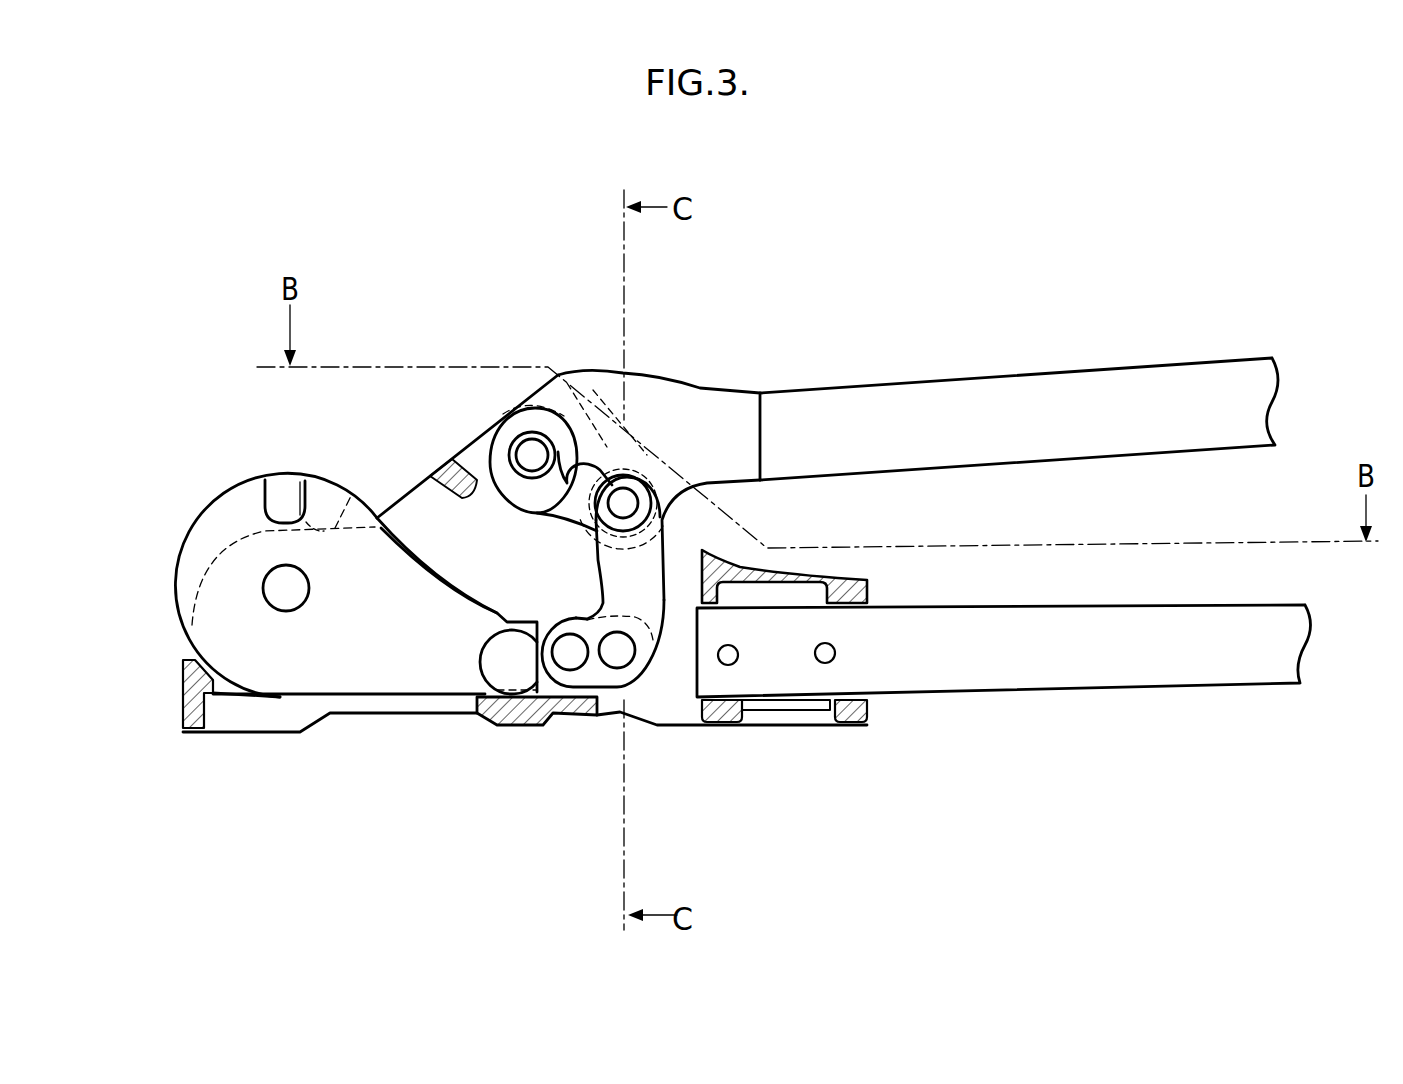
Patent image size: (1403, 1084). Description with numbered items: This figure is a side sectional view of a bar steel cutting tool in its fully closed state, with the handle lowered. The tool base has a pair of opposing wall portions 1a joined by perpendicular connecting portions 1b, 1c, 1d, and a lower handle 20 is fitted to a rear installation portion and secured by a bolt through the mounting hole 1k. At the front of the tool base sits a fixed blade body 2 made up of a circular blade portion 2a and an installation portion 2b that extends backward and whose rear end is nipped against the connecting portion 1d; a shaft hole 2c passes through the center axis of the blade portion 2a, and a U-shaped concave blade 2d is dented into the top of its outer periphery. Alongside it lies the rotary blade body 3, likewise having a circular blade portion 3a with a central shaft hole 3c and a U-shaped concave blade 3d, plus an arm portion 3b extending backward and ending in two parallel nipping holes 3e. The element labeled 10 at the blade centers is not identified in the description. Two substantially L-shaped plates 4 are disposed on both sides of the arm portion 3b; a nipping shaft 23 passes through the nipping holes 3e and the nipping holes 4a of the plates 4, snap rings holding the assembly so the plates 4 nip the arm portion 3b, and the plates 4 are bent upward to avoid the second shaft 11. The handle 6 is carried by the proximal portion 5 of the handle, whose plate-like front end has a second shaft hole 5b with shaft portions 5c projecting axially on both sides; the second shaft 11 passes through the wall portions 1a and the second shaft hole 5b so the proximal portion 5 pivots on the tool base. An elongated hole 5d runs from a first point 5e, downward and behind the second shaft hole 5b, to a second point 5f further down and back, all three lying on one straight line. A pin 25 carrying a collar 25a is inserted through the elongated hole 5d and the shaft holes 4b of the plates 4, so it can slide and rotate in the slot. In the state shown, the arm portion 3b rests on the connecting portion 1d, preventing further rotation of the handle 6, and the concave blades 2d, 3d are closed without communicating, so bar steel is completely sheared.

The wall portion 1a is at (427, 540).
The connecting portion 1b is at (196, 705).
The connecting portion 1c is at (437, 530).
The connecting portion 1d is at (536, 713).
The mounting hole 1k is at (823, 657).
The fixed blade body 2 is at (172, 528).
The blade portion 2a is at (223, 517).
The installation portion 2b is at (477, 713).
The shaft hole 2c is at (285, 608).
The concave blade 2d is at (297, 510).
The rotary blade body 3 is at (170, 578).
The blade portion 3a is at (283, 497).
The arm portion 3b is at (572, 672).
The shaft hole 3c is at (285, 608).
The concave blade 3d is at (303, 510).
The nipping hole 3e is at (600, 710).
The plate 4 is at (662, 522).
The nipping hole 4a is at (627, 700).
The shaft hole 4b is at (668, 497).
The proximal portion of the handle 5 is at (718, 420).
The second shaft hole 5b is at (500, 418).
The shaft portion 5c is at (490, 461).
The elongated hole 5d is at (587, 485).
The first point 5e is at (556, 395).
The second point 5f is at (641, 440).
The handle 6 is at (1040, 423).
The jaw pivot pin 10 is at (283, 590).
The second shaft 11 is at (530, 453).
The lower handle 20 is at (1040, 655).
The nipping shaft 23 is at (568, 650).
The pin 25 is at (663, 485).
The collar 25a is at (593, 520).